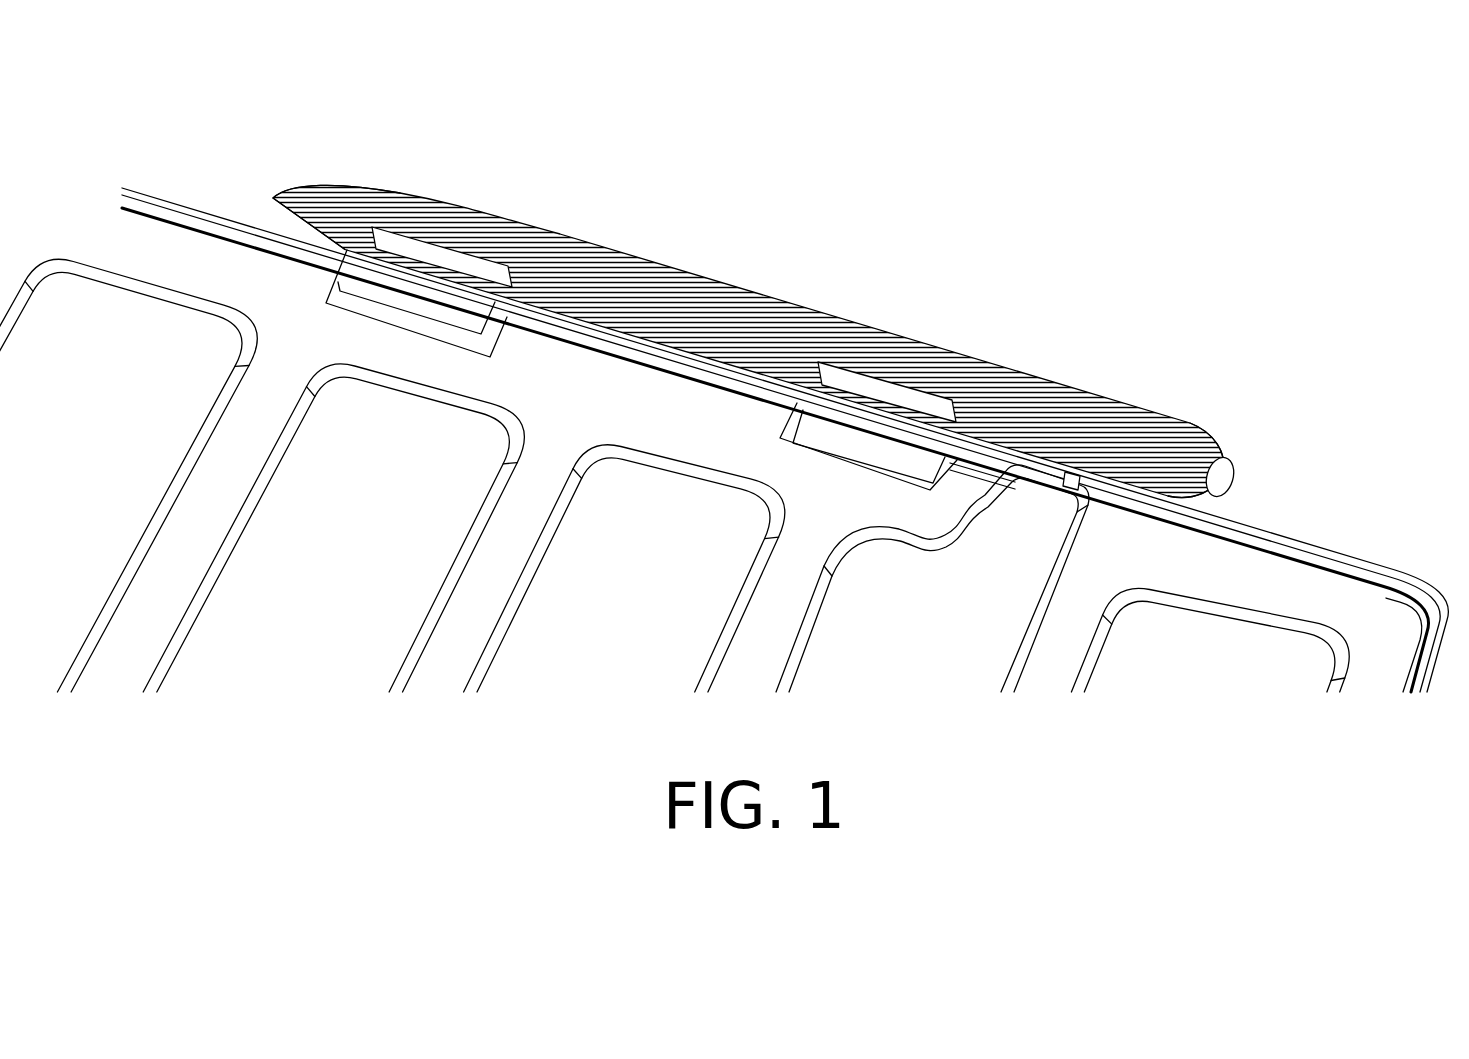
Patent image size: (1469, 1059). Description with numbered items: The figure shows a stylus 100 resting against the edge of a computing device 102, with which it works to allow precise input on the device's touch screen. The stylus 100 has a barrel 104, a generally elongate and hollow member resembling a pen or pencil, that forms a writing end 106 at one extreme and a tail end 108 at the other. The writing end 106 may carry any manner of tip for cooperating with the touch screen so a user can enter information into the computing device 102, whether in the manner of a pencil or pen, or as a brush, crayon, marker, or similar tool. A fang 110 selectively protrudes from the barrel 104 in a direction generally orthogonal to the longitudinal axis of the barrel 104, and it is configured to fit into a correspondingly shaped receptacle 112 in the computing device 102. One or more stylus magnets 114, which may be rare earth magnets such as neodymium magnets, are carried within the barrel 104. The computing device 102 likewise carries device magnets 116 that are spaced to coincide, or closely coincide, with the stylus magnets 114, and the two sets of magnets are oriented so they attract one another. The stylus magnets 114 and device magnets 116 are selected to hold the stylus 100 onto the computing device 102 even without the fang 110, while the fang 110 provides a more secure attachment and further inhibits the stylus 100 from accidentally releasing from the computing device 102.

The stylus 100 is at (708, 222).
The computing device 102 is at (1268, 568).
The barrel 104 is at (810, 330).
The writing end 106 is at (288, 178).
The tail end 108 is at (1220, 420).
The fang 110 is at (1052, 468).
The receptacle 112 is at (1047, 487).
The stylus magnets 114 is at (440, 255).
The device magnets 116 is at (437, 333).